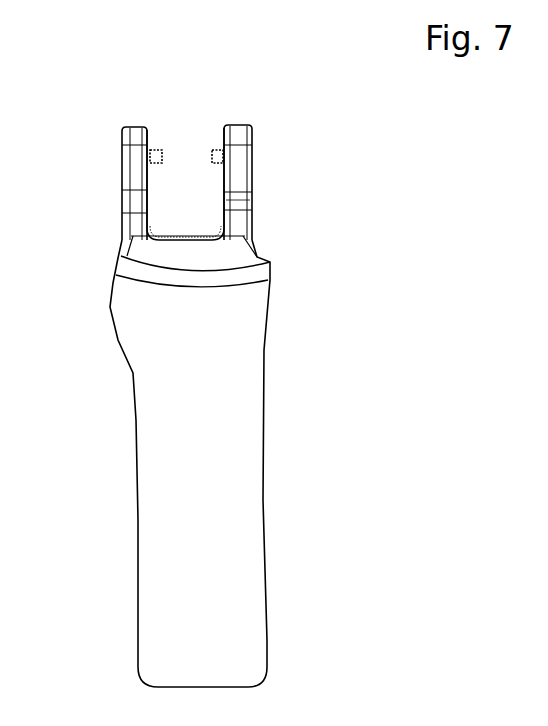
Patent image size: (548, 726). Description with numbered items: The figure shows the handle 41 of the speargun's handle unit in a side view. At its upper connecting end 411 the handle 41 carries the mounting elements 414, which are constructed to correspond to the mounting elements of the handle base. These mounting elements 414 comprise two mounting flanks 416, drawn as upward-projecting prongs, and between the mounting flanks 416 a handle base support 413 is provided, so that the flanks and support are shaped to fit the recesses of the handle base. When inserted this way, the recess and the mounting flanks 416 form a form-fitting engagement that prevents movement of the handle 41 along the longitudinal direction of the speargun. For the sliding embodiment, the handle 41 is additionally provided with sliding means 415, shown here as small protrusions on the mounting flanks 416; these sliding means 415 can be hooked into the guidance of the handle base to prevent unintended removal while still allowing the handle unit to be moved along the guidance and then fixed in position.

The handle 41 is at (238, 483).
The connecting end 411 is at (310, 176).
The handle base support 413 is at (187, 136).
The mounting elements 414 is at (265, 104).
The sliding means 415 is at (214, 159).
The mounting flanks 416 is at (128, 152).